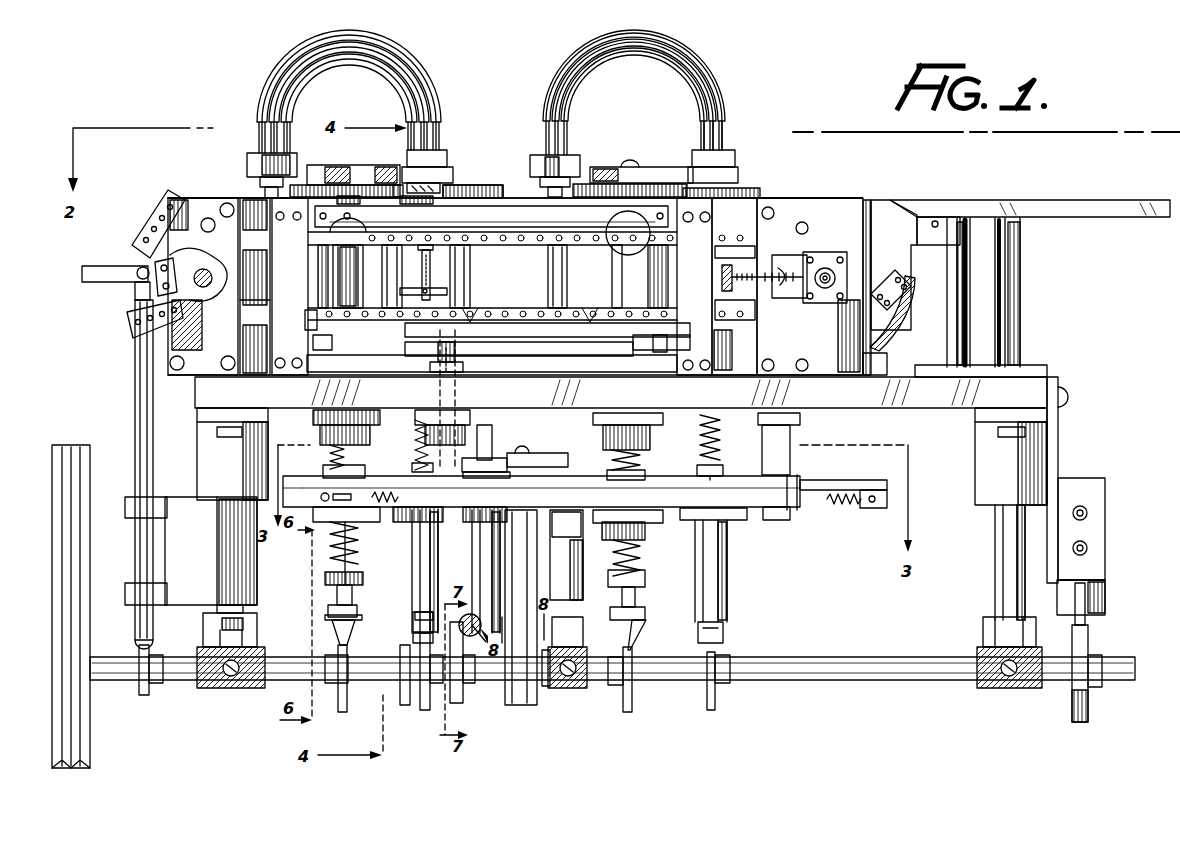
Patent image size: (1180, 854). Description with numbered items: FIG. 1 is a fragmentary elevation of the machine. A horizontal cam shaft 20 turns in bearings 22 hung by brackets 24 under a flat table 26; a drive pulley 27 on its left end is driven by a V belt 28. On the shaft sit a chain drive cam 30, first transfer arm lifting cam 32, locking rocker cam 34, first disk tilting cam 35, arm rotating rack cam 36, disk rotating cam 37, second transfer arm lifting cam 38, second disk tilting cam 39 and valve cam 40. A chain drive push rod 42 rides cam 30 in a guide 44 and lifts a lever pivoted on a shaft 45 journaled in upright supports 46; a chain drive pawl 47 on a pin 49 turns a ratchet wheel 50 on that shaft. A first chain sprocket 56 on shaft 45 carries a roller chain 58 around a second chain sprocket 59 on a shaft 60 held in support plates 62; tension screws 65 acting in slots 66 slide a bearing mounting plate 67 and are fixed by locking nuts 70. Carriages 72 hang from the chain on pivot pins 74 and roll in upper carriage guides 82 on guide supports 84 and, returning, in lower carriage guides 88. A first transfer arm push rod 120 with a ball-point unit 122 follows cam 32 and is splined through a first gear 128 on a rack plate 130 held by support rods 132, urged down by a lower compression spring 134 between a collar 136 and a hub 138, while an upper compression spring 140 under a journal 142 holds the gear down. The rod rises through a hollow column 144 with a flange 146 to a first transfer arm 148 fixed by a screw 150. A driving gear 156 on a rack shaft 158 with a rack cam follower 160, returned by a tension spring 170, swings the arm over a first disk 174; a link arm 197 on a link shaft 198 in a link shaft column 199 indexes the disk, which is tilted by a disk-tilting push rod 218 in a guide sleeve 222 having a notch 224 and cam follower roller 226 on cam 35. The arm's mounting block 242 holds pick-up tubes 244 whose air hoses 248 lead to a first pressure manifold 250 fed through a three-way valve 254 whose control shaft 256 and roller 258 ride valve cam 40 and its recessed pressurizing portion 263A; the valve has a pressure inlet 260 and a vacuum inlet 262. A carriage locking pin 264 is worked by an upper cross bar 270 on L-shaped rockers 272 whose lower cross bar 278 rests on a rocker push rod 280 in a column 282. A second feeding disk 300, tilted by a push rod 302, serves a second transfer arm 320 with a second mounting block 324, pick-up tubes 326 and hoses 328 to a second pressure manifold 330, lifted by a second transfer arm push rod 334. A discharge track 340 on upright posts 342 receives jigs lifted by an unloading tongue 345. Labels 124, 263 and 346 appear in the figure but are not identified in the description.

The cam shaft 20 is at (840, 665).
The bearings 22 is at (255, 690).
The brackets 24 is at (197, 470).
The table 26 is at (912, 372).
The drive pulley 27 is at (90, 485).
The V belt 28 is at (72, 445).
The chain drive cam 30 is at (140, 652).
The first transfer arm lifting cam 32 is at (330, 650).
The locking rocker cam 34 is at (404, 708).
The first disk tilting cam 35 is at (422, 705).
The arm rotating rack cam 36 is at (455, 703).
The disk rotating cam 37 is at (545, 690).
The second transfer arm lifting cam 38 is at (633, 700).
The second disk tilting cam 39 is at (722, 698).
The valve cam 40 is at (1092, 710).
The chain drive push rod 42 is at (135, 378).
The guide 44 is at (125, 508).
The transverse horizontal shaft 45 is at (198, 276).
The upright supports 46 is at (216, 198).
The chain drive pawl 47 is at (148, 270).
The pin 49 is at (135, 283).
The chain drive ratchet wheel 50 is at (206, 273).
The first chain sprocket 56 is at (268, 290).
The roller chain 58 is at (572, 285).
The second chain sprocket 59 is at (800, 300).
The horizontal transverse shaft 60 is at (825, 290).
The support plates 62 is at (838, 200).
The tension screws 65 is at (772, 298).
The horizontal slot 66 is at (780, 256).
The bearing mounting plate 67 is at (822, 252).
The locking nuts 70 is at (745, 264).
The carriages 72 is at (160, 200).
The pivot pins 74 is at (508, 318).
The upper carriage guides 82 is at (510, 200).
The carriage guide supports 84 is at (492, 286).
The lower carriage guides 88 is at (568, 340).
The first transfer arm push rod 120 is at (337, 592).
The ball-point unit 122 is at (325, 625).
The spring 124 is at (330, 545).
The first gear 128 is at (323, 470).
The rack plate 130 is at (750, 500).
The support rods 132 is at (792, 452).
The lower compression spring 134 is at (360, 535).
The collar 136 is at (362, 580).
The hub 138 is at (325, 525).
The upper compression spring 140 is at (350, 440).
The journal 142 is at (328, 420).
The vertical hollow column 144 is at (345, 250).
The horizontal flange 146 is at (303, 185).
The first transfer arm 148 is at (312, 165).
The screw 150 is at (345, 165).
The driving gear 156 is at (440, 478).
The vertical rack shaft 158 is at (493, 437).
The rack cam follower 160 is at (474, 637).
The tension spring 170 is at (385, 492).
The first disk 174 is at (480, 183).
The link arm 197 is at (548, 455).
The link shaft 198 is at (505, 705).
The hollow link shaft column 199 is at (510, 553).
The disk-tilting push rod 218 is at (432, 270).
The guide sleeve 222 is at (365, 512).
The notch 224 is at (418, 615).
The cam follower roller 226 is at (413, 640).
The pick-up tube mounting block 242 is at (445, 160).
The pick-up tubes 244 is at (430, 142).
The flexible air hoses 248 is at (408, 75).
The first pressure manifold 250 is at (256, 153).
The 3-way valve 254 is at (1100, 478).
The control shaft 256 is at (1105, 588).
The roller 258 is at (1085, 603).
The first inlet 260 is at (1087, 512).
The second inlet 262 is at (1087, 547).
The block 263 is at (395, 180).
The recessed pressurizing portion 263A is at (1076, 715).
The first carriage locking pin 264 is at (625, 215).
The upper cross bar 270 is at (480, 270).
The L-shaped rockers 272 is at (306, 248).
The lower cross bar 278 is at (522, 343).
The rocker push rod 280 is at (458, 350).
The column 282 is at (438, 410).
The second feeding disk 300 is at (772, 190).
The push rod 302 is at (715, 465).
The second transfer arm 320 is at (648, 165).
The second pick-up tube mounting block 324 is at (737, 158).
The second set of pick-up tubes 326 is at (720, 138).
The flexible hoses 328 is at (700, 80).
The second pressure manifold 330 is at (568, 160).
The second transfer arm push rod 334 is at (633, 595).
The discharge track 340 is at (1124, 198).
The upright posts 342 is at (968, 285).
The unloading tongue 345 is at (886, 200).
The arm 346 is at (898, 290).